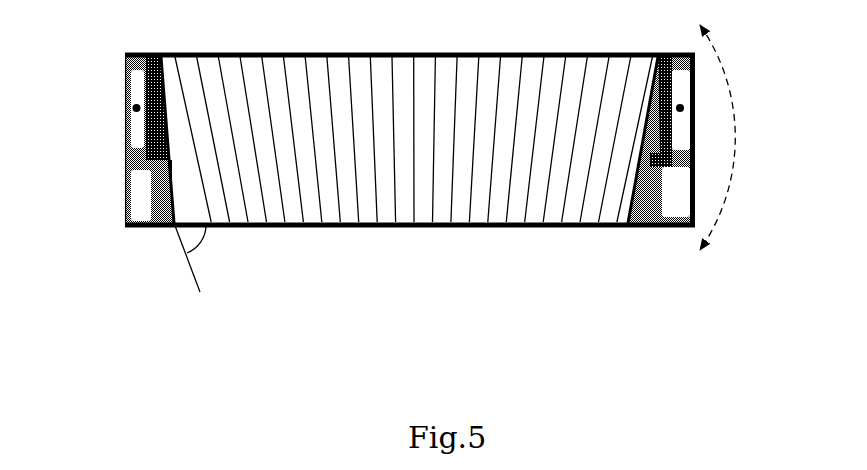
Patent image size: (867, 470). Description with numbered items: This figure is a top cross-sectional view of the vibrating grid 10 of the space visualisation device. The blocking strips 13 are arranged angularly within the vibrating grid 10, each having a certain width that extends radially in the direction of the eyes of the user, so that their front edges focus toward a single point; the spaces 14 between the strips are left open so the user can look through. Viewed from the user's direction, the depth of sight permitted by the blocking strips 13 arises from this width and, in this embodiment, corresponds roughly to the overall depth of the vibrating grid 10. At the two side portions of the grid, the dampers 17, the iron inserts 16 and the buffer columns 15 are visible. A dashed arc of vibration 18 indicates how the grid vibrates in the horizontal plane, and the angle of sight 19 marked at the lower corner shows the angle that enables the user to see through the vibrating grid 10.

The vibrating grid 10 is at (110, 131).
The blocking strips 13 is at (567, 168).
The pleat channels 14 is at (275, 158).
The buffer columns 15 is at (694, 226).
The iron inserts 16 is at (668, 190).
The dampers 17 is at (683, 80).
The arc of vibration 18 is at (733, 127).
The angle of sight 19 is at (189, 241).